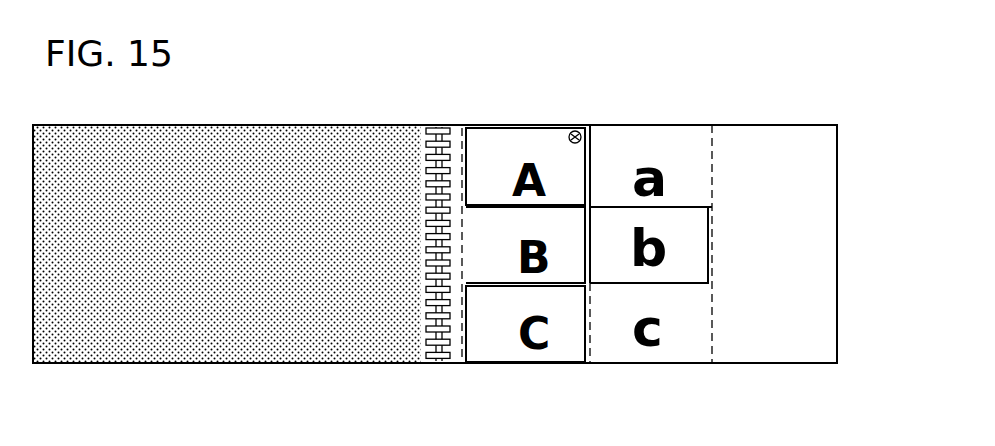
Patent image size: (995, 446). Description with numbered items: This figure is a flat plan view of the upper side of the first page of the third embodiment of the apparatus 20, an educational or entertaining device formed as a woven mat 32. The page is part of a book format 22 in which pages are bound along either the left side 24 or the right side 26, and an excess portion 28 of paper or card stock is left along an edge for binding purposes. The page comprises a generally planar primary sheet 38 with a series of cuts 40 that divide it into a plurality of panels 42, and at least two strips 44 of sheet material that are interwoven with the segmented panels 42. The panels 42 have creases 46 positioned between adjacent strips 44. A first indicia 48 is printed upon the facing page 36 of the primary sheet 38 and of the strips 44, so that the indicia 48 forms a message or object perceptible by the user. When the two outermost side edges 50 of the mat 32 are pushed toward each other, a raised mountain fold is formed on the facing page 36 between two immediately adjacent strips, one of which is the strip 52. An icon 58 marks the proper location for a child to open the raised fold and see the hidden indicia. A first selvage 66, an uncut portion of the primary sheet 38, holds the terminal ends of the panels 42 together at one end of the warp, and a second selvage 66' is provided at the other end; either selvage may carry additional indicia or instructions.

The apparatus 20 is at (762, 106).
The book format 22 is at (465, 365).
The left side 24 is at (447, 366).
The right side 26 is at (830, 363).
The excess portion 28 is at (454, 128).
The woven mat 32 is at (578, 362).
The facing page 36 is at (534, 136).
The primary sheet 38 is at (830, 223).
The cuts 40 is at (515, 204).
The panels 42 is at (700, 157).
The strips 44 is at (711, 230).
The creases 46 is at (590, 150).
The first indicia 48 is at (548, 176).
The outermost side edges 50 is at (457, 314).
The strip 52 is at (484, 138).
The icon 58 is at (580, 132).
The first selvage 66 is at (411, 109).
The second selvage 66' is at (872, 182).